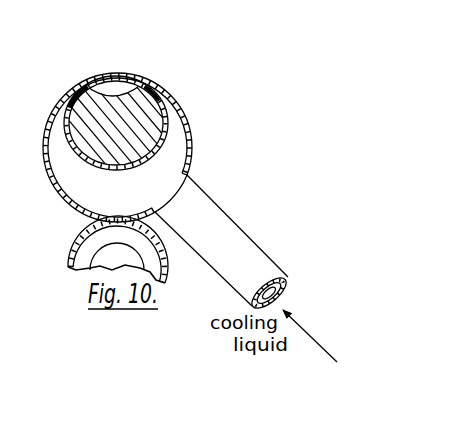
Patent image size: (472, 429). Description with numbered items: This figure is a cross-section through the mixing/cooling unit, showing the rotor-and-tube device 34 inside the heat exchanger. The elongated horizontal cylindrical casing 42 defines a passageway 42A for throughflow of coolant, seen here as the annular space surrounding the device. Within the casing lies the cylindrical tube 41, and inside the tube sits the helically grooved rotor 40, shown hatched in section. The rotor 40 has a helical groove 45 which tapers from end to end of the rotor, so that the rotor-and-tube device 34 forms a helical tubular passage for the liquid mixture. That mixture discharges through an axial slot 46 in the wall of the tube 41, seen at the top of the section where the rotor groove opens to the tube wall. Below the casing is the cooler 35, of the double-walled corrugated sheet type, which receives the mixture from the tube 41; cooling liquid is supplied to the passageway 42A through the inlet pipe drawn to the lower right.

The rotor-and-tube device 34 is at (174, 89).
The cooler 35 is at (78, 240).
The rotor 40 is at (113, 123).
The cylindrical tube 41 is at (70, 106).
The cylindrical casing 42 is at (45, 158).
The passageway 42A is at (117, 196).
The helical groove 45 is at (99, 80).
The axial slot 46 is at (119, 77).